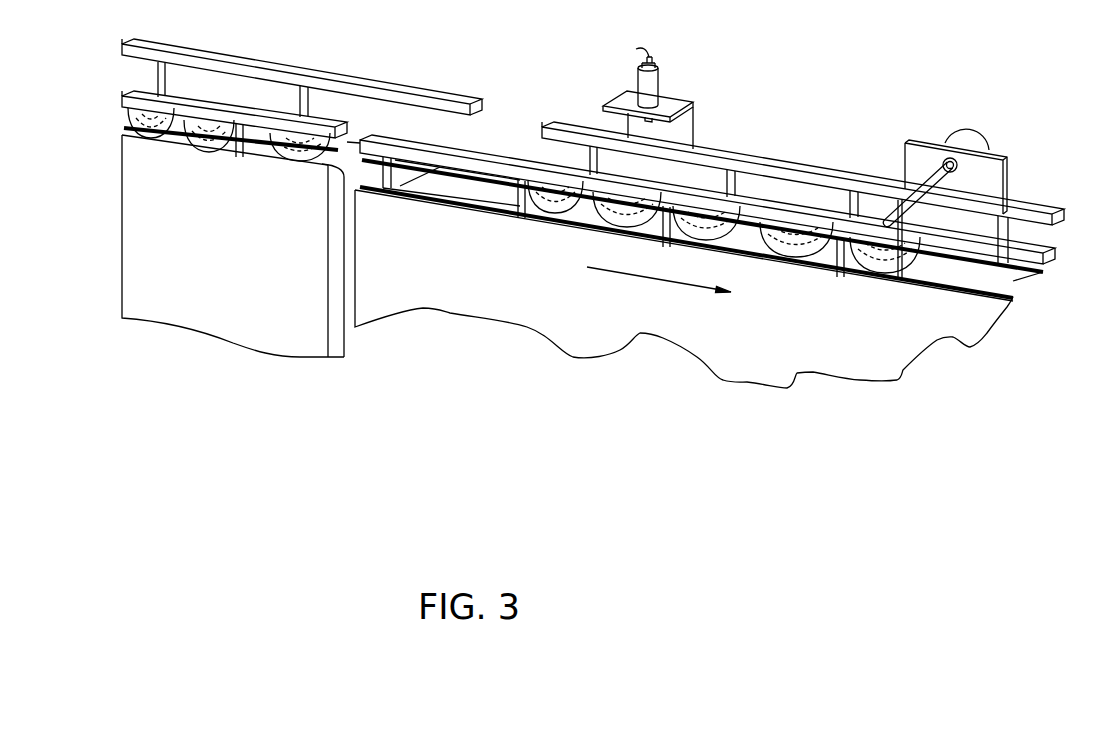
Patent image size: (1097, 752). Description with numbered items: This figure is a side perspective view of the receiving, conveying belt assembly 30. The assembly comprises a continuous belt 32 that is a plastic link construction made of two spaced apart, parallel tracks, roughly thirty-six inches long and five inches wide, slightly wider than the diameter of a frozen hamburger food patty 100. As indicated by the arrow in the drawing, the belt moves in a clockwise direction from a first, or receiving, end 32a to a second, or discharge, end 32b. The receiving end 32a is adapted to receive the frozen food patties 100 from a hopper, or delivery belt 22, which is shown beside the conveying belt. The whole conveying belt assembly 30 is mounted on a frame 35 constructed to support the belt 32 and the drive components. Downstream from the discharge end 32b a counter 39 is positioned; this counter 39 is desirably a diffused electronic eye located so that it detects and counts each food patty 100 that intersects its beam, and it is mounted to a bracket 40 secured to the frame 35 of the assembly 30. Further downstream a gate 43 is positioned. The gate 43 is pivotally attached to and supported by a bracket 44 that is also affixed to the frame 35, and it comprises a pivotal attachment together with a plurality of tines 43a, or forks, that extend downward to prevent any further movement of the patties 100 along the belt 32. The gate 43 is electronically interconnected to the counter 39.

The delivery belt 22 is at (253, 287).
The conveying belt assembly 30 is at (838, 76).
The belt 32 is at (745, 238).
The receiving end 32a is at (444, 181).
The discharge end 32b is at (1017, 281).
The frame 35 is at (455, 283).
The counter 39 is at (650, 83).
The bracket 40 is at (683, 124).
The gate 43 is at (925, 142).
The tines 43a is at (922, 222).
The bracket 44 is at (1007, 167).
The frozen hamburger food patty 100 is at (200, 133).